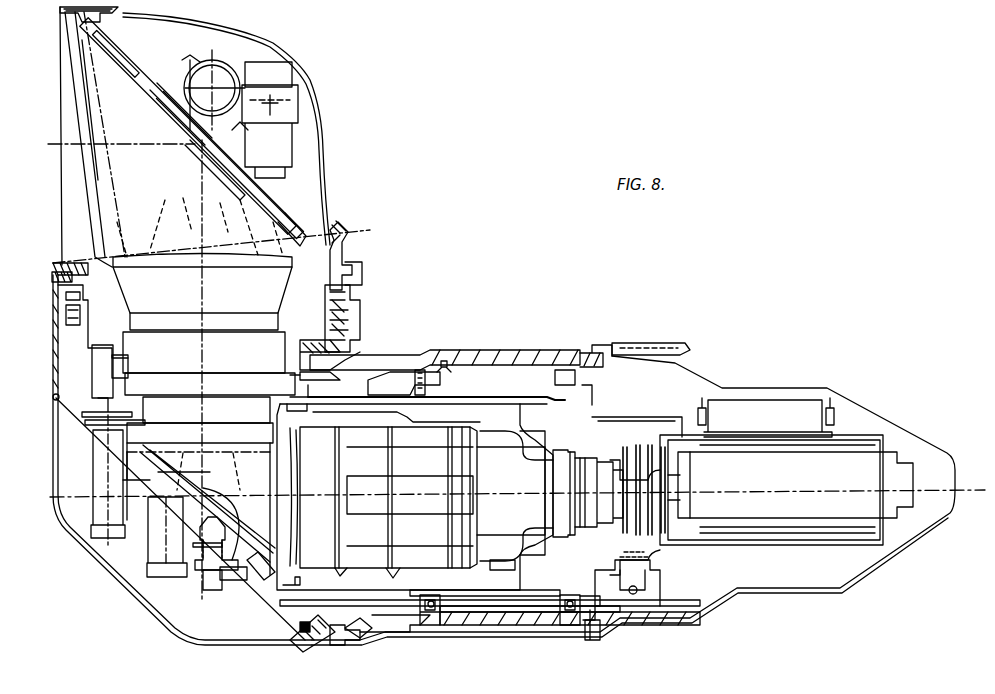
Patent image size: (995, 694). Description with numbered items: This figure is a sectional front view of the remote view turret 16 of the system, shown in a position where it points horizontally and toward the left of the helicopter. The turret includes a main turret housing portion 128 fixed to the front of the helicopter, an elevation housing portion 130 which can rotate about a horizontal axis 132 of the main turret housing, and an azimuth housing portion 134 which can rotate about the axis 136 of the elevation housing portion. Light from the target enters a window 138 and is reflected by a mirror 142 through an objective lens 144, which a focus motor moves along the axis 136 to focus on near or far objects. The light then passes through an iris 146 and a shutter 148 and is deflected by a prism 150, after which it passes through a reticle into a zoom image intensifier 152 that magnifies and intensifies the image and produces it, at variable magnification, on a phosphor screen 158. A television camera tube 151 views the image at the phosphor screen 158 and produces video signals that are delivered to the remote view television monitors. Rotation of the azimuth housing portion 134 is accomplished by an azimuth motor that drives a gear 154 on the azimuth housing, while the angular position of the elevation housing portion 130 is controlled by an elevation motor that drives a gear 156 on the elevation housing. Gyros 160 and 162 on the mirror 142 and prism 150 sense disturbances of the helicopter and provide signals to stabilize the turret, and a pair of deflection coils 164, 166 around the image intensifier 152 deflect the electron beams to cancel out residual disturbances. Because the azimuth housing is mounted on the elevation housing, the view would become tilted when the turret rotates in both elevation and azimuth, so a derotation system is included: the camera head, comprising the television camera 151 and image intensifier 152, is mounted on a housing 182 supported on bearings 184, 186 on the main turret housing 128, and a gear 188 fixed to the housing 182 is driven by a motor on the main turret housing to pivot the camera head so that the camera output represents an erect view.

The remote view turret 16 is at (554, 327).
The main turret housing portion 128 is at (492, 632).
The elevation housing portion 130 is at (430, 336).
The horizontal axis 132 is at (212, 555).
The azimuth housing portion 134 is at (345, 250).
The axis of the elevation housing portion 136 is at (200, 190).
The window 138 is at (88, 143).
The mirror 142 is at (178, 124).
The objective lens 144 is at (235, 247).
The iris 146 is at (278, 345).
The shutter 148 is at (155, 423).
The prism 150 is at (203, 495).
The television camera tube 151 is at (833, 460).
The zoom image intensifier 152 is at (420, 427).
The gear 154 is at (330, 338).
The gear 156 is at (313, 637).
The phosphor screen 158 is at (578, 445).
The gyro 160 is at (290, 133).
The gyro 162 is at (152, 543).
The deflection coil 164 is at (477, 483).
The deflection coil 166 is at (473, 430).
The housing 182 is at (473, 593).
The bearing 184 is at (560, 600).
The bearing 186 is at (427, 602).
The gear 188 is at (585, 602).